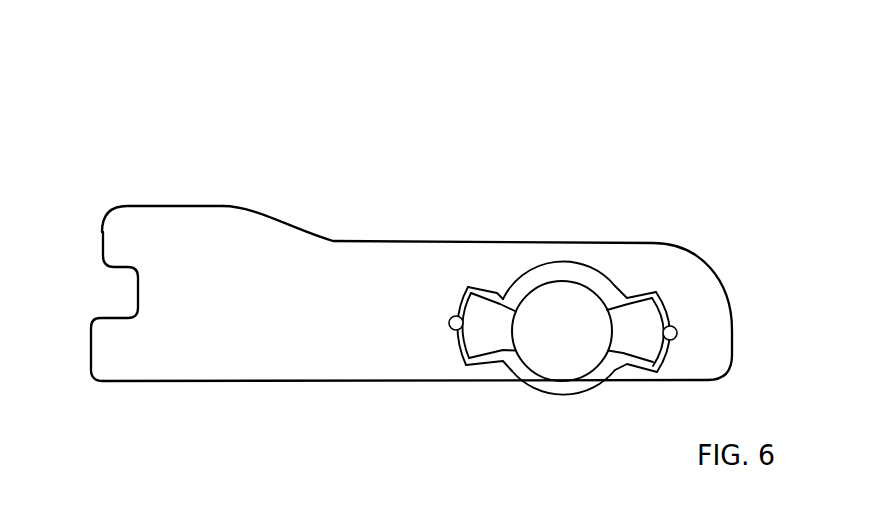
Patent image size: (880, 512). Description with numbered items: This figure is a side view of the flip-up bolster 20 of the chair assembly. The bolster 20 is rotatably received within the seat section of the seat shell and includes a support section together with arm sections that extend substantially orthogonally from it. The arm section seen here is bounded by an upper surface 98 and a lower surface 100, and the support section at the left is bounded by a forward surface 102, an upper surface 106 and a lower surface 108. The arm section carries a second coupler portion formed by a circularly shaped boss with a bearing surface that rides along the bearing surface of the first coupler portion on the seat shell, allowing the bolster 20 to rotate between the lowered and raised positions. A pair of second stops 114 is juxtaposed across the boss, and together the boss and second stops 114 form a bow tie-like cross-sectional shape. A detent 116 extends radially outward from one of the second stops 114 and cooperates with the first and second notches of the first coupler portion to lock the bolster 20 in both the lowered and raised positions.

The bolster 20 is at (343, 126).
The upper surface 98 is at (333, 240).
The lower surface 100 is at (297, 383).
The forward surface 102 is at (102, 240).
The upper surface 106 is at (139, 205).
The lower surface 108 is at (103, 383).
The second stop 114 is at (665, 292).
The detent 116 is at (452, 316).